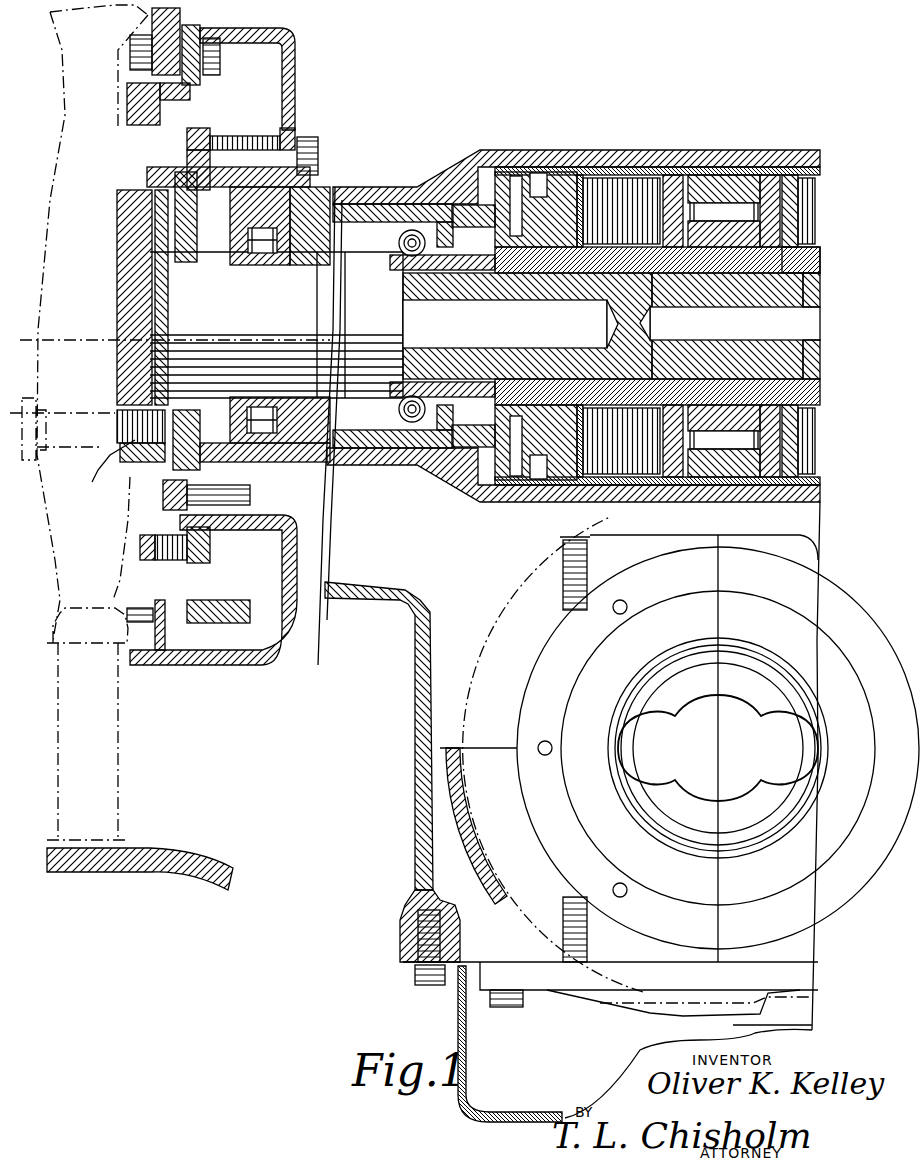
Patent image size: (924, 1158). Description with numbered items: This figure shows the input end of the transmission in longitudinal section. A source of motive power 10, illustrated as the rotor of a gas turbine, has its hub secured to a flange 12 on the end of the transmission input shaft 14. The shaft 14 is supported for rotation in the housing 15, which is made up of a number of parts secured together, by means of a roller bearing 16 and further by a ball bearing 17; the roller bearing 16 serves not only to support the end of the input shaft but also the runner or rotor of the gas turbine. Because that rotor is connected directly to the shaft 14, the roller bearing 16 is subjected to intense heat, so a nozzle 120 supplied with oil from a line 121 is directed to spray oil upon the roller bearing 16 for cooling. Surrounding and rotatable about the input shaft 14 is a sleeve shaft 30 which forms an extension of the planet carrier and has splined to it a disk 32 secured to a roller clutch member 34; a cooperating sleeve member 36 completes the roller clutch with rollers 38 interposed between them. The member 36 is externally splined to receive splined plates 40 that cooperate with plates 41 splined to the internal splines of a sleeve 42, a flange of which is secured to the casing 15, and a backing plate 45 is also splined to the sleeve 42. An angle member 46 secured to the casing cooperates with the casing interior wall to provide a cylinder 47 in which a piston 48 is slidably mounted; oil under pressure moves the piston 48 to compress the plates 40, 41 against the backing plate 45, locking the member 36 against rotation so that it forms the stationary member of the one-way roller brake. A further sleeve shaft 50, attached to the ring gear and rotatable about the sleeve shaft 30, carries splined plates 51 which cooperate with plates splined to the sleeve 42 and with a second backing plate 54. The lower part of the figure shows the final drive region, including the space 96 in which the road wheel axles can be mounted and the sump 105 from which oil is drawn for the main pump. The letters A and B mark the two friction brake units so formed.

The source of motive power 10 is at (55, 122).
The flange 12 is at (137, 240).
The transmission input shaft 14 is at (296, 267).
The housing 15 is at (296, 70).
The roller bearing 16 is at (262, 255).
The ball bearing 17 is at (397, 247).
The sleeve shaft 30 is at (750, 280).
The disk 32 is at (776, 180).
The roller clutch member 34 is at (753, 172).
The sleeve member 36 is at (692, 265).
The rollers 38 is at (703, 210).
The splined plates 40 is at (593, 245).
The plates 41 is at (615, 178).
The sleeve 42 is at (650, 175).
The backing plate 45 is at (679, 177).
The angle member 46 is at (500, 223).
The cylinder 47 is at (514, 177).
The piston 48 is at (559, 198).
The sleeve shaft 50 is at (803, 300).
The plates 51 is at (797, 267).
The backing plate 54 is at (786, 490).
The space 96 is at (715, 790).
The sump 105 is at (473, 1090).
The nozzle 120 is at (318, 452).
The line 121 is at (362, 450).
The clutch A is at (586, 180).
The clutch B is at (807, 173).